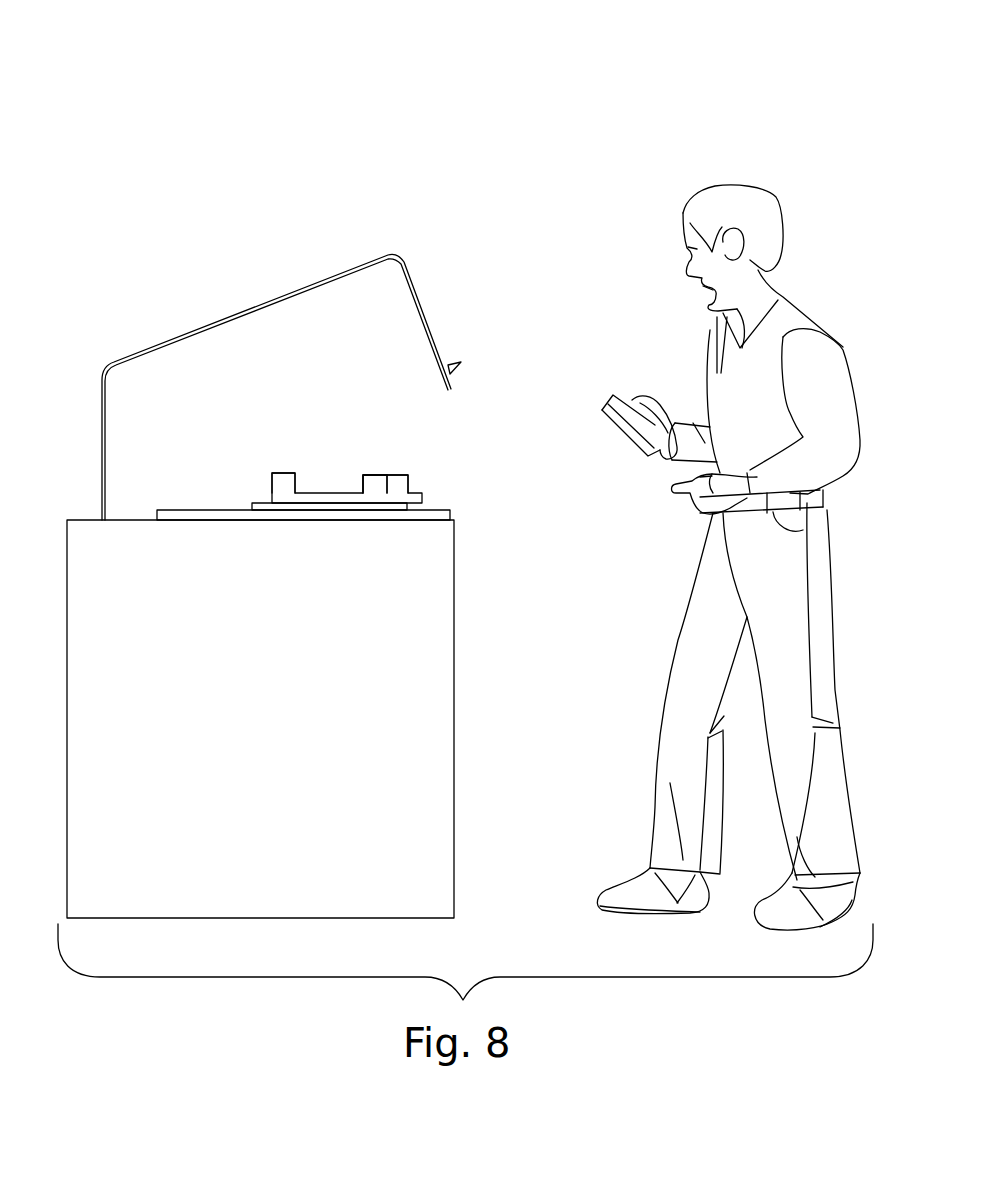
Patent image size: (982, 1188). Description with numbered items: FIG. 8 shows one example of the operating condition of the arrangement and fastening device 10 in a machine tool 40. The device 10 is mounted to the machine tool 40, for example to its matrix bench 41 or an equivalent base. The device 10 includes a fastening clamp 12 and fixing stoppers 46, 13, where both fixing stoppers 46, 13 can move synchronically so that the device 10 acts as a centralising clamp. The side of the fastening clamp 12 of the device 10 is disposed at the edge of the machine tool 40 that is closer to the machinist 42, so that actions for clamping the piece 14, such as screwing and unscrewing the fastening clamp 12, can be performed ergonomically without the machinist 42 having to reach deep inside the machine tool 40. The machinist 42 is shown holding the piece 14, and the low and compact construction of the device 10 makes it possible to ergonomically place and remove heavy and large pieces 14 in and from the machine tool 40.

The machine tool 40 is at (203, 260).
The matrix bench 41 is at (208, 503).
The arrangement and fastening device 10 is at (316, 425).
The fixing stopper 13 is at (278, 462).
The fastening clamp 12 is at (382, 458).
The fixing stopper 46 is at (360, 470).
The machinist 42 is at (681, 181).
The piece 14 is at (600, 397).